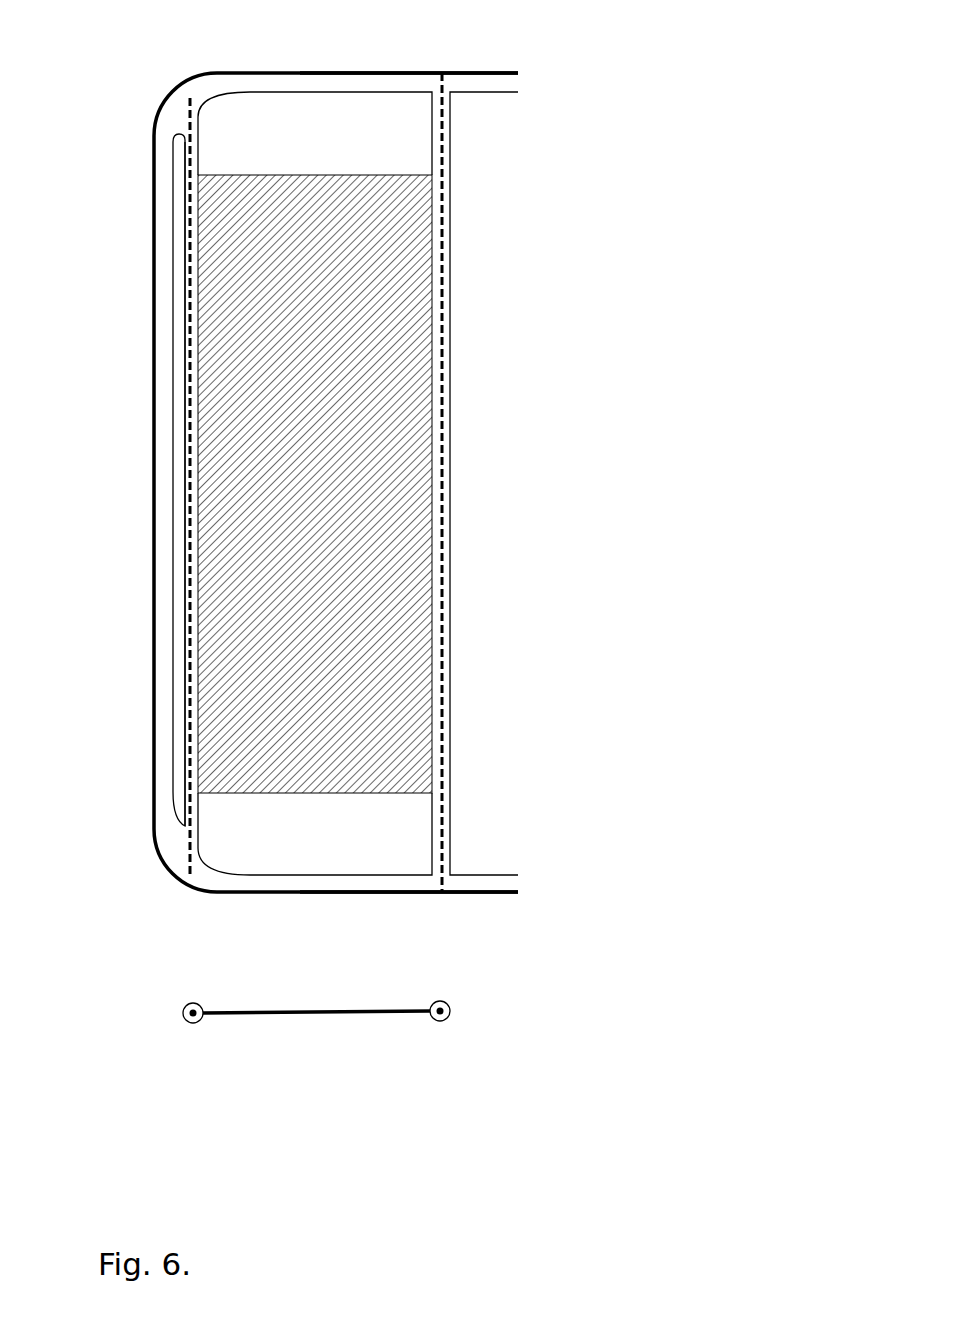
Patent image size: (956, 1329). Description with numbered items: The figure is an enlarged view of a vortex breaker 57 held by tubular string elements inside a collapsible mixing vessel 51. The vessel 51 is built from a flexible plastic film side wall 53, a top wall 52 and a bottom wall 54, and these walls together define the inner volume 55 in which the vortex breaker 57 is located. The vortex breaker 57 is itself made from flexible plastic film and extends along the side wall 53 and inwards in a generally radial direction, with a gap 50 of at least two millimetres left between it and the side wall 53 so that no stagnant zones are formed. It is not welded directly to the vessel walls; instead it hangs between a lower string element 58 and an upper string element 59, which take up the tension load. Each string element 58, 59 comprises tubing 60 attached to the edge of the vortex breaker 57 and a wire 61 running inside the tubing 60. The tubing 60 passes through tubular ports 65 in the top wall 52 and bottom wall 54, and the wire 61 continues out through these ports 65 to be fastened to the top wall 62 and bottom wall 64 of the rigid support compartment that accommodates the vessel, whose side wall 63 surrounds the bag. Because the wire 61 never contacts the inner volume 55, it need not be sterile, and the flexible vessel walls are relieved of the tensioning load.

The gap 50 is at (178, 450).
The collapsible mixing vessel 51 is at (615, 481).
The top wall 52 is at (317, 93).
The side wall 53 is at (170, 382).
The bottom wall 54 is at (287, 875).
The inner volume 55 is at (534, 316).
The vortex breaker 57 is at (378, 593).
The string element 58 is at (200, 820).
The string element 59 is at (200, 162).
The tubing 60 is at (185, 652).
The wire 61 is at (190, 512).
The top wall of rigid support compartment 62 is at (400, 73).
The outer housing 63 is at (150, 312).
The bottom wall of rigid support compartment 64 is at (370, 892).
The tubular ports 65 is at (432, 92).